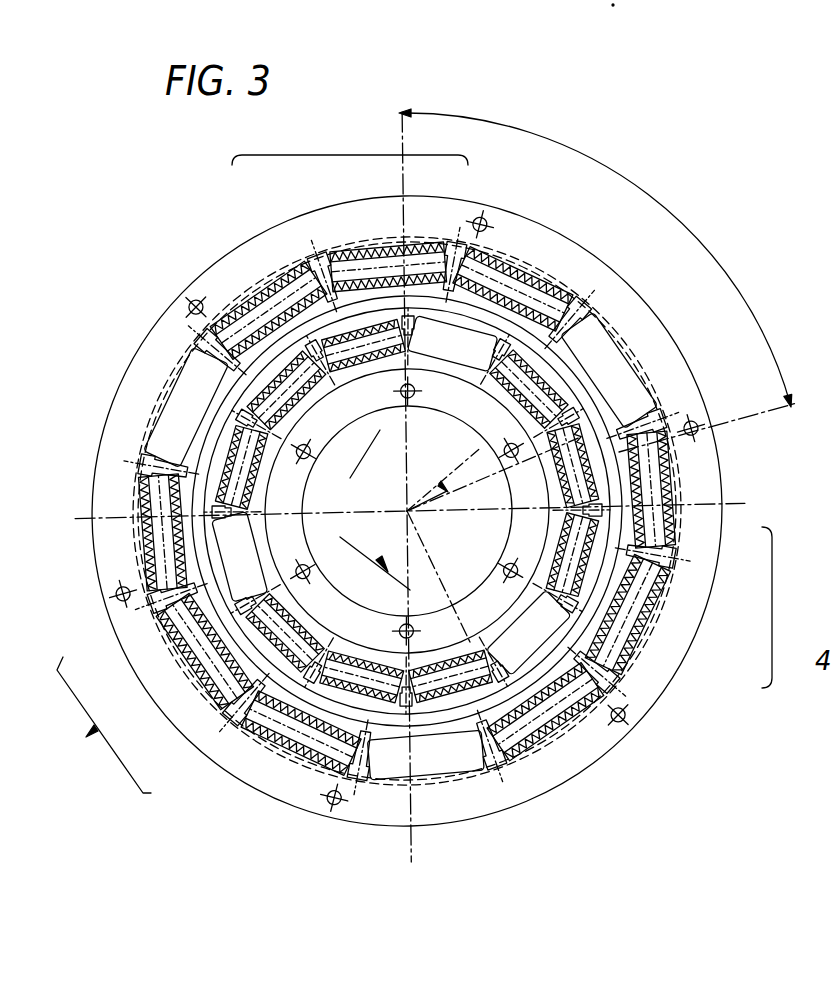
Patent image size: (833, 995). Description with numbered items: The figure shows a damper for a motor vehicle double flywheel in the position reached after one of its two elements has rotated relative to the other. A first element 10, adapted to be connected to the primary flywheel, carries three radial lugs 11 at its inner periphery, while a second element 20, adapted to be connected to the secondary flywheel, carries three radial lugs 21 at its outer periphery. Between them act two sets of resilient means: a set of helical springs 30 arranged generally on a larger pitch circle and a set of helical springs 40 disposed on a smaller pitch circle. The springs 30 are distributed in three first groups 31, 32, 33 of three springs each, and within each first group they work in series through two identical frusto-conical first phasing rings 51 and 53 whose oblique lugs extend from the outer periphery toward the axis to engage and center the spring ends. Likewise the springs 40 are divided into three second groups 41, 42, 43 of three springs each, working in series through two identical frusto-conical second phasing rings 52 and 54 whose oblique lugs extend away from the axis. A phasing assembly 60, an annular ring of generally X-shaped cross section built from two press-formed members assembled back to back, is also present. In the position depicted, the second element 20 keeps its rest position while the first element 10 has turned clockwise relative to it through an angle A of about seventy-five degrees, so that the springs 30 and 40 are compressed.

The first element 10 is at (333, 237).
The radial lugs 11 is at (642, 408).
The second element 20 is at (368, 419).
The radial lugs 21 is at (545, 588).
The helical springs 30 is at (262, 276).
The first group of springs 31 is at (772, 639).
The first group of springs 32 is at (104, 725).
The first group of springs 33 is at (350, 140).
The helical springs 40 is at (330, 364).
The second group of springs 41 is at (430, 474).
The second group of springs 42 is at (375, 558).
The second group of springs 43 is at (350, 466).
The first phasing ring 51 is at (660, 562).
The second phasing ring 52 is at (552, 432).
The first phasing ring 53 is at (604, 668).
The second phasing ring 54 is at (563, 517).
The phasing assembly 60 is at (588, 290).
The angle A is at (598, 280).